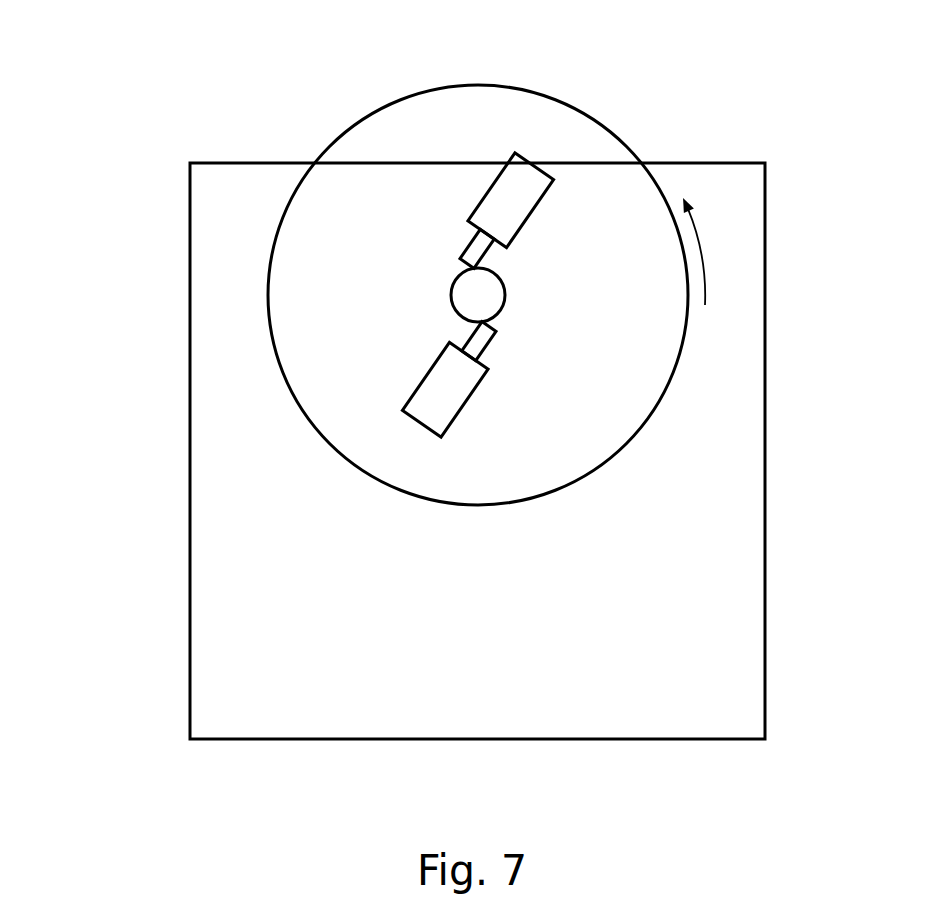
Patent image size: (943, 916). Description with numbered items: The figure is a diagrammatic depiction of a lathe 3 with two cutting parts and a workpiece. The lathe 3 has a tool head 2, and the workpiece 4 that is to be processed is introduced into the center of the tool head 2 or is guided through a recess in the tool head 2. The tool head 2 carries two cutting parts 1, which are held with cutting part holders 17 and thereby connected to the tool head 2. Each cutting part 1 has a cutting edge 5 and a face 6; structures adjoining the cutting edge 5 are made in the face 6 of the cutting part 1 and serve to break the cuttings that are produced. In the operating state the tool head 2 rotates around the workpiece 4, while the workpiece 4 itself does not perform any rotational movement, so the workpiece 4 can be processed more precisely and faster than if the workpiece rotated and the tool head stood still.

The cutting part 1 is at (480, 243).
The tool head 2 is at (502, 117).
The lathe 3 is at (136, 311).
The workpiece 4 is at (466, 300).
The cutting edge 5 is at (462, 265).
The face 6 is at (447, 255).
The cutting part holder 17 is at (537, 182).